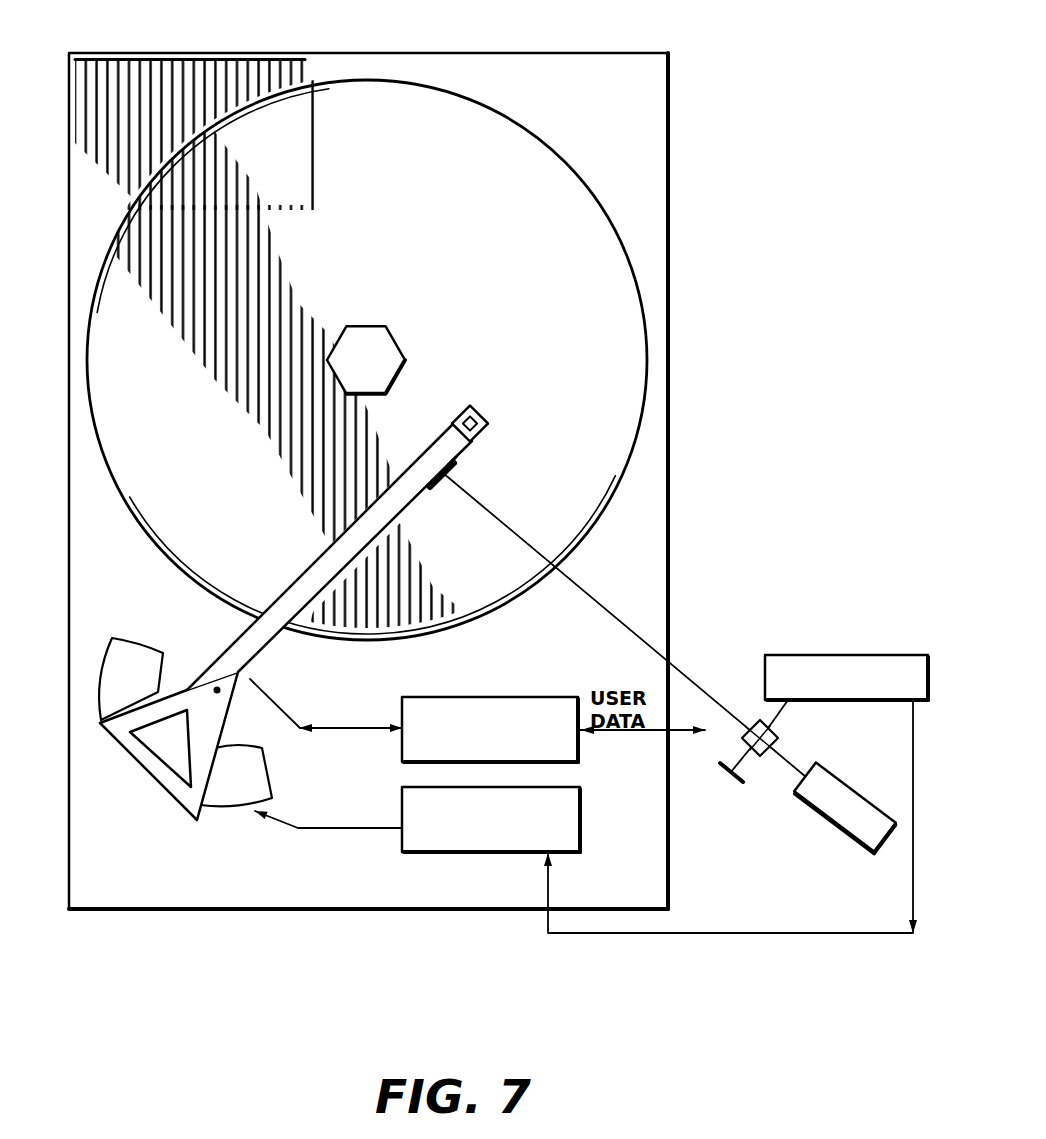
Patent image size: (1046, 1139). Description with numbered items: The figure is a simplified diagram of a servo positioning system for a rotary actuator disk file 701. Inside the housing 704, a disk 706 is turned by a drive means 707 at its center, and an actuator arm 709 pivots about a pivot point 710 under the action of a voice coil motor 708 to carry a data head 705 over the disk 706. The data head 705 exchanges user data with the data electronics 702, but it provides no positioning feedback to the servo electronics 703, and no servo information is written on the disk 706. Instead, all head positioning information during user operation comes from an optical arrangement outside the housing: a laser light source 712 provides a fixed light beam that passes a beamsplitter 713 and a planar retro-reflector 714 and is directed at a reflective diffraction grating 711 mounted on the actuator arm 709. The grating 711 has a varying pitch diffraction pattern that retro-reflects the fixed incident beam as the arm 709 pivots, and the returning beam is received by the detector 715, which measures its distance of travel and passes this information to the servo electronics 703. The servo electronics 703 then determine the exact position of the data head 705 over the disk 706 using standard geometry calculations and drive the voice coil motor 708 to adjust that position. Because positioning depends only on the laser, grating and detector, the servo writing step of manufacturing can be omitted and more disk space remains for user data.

The rotary actuator disk file 701 is at (713, 49).
The data electronics 702 is at (508, 697).
The servo electronics 703 is at (478, 853).
The housing 704 is at (607, 54).
The data head 705 is at (488, 417).
The disk 706 is at (570, 167).
The drive means 707 is at (386, 326).
The voice coil motor 708 is at (123, 767).
The actuator arm 709 is at (267, 608).
The pivot point 710 is at (217, 690).
The reflective diffraction grating 711 is at (435, 490).
The laser light source 712 is at (808, 803).
The beamsplitter 713 is at (778, 730).
The planar retro-reflector 714 is at (723, 768).
The detector 715 is at (872, 655).